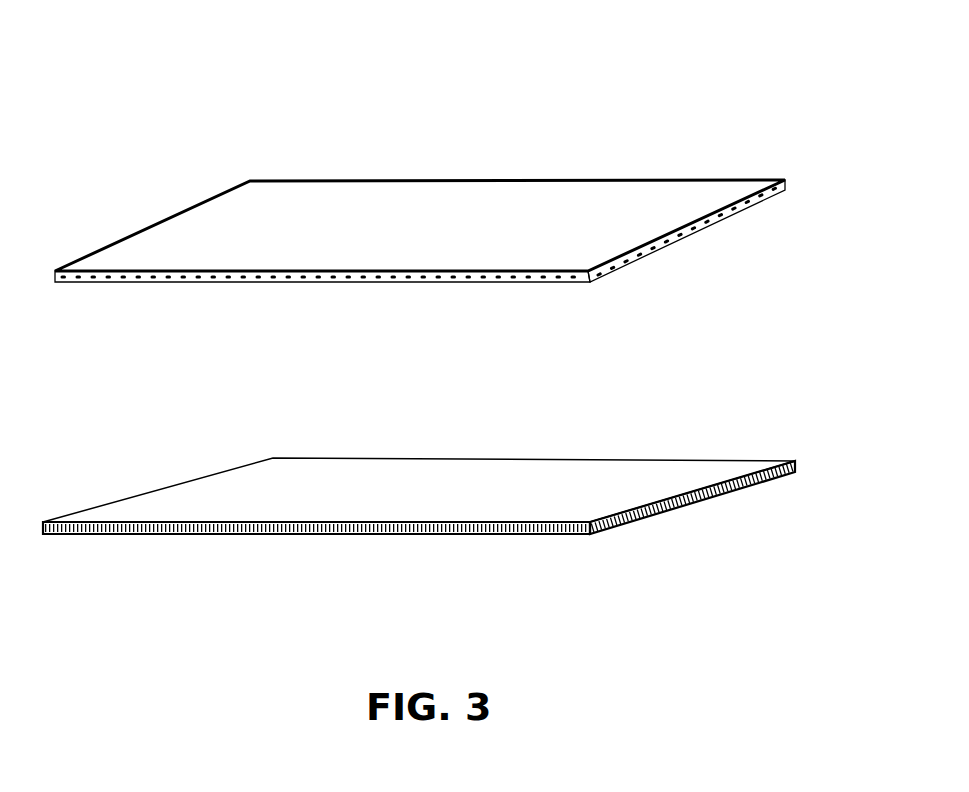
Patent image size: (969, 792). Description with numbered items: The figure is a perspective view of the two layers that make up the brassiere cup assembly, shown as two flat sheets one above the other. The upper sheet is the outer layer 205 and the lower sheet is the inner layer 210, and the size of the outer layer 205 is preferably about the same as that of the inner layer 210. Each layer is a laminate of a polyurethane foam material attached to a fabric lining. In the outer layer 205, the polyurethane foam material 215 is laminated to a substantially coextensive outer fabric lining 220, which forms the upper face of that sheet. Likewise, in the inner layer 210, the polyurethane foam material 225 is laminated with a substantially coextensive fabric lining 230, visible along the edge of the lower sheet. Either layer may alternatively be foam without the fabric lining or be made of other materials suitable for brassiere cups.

The outer layer 205 is at (641, 147).
The inner layer 210 is at (235, 430).
The polyurethane foam material 215 is at (688, 237).
The outer fabric lining 220 is at (258, 220).
The polyurethane foam material 225 is at (406, 482).
The fabric lining 230 is at (625, 524).